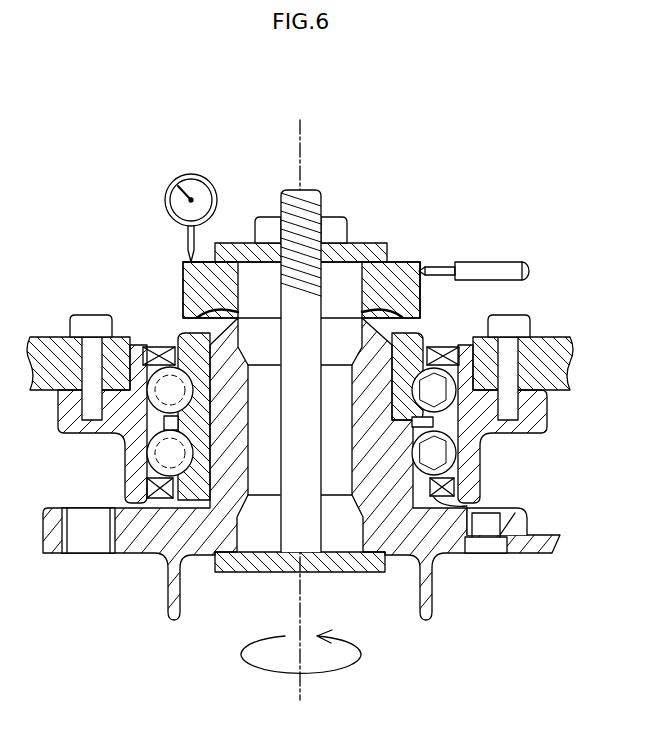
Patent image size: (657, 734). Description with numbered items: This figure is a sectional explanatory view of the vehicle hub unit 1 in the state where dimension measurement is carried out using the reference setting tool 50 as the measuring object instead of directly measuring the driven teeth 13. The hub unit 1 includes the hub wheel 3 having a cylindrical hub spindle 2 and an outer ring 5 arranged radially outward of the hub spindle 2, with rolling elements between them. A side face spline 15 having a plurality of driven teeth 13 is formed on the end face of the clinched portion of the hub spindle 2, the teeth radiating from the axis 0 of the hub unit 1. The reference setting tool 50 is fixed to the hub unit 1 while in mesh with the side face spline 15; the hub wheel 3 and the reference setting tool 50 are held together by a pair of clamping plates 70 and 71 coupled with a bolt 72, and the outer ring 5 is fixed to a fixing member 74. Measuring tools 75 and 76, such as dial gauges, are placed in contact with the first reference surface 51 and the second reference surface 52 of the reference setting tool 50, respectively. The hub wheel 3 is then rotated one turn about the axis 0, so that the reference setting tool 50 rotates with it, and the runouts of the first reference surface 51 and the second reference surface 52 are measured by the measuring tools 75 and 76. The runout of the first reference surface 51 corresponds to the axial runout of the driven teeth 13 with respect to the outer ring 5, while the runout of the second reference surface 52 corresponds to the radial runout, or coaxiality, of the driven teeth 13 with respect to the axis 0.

The axis 0 is at (298, 142).
The vehicle hub unit 1 is at (307, 456).
The hub spindle 2 is at (200, 480).
The hub wheel 3 is at (557, 508).
The outer ring 5 is at (83, 436).
The driven teeth 13 is at (187, 318).
The side face spline 15 is at (173, 316).
The reference setting tool 50 is at (334, 244).
The first reference surface 51 is at (205, 250).
The second reference surface 52 is at (421, 300).
The clamping plate 70 is at (372, 578).
The clamping plate 71 is at (371, 243).
The bolt 72 is at (310, 188).
The fixing member 74 is at (45, 338).
The measuring tool 75 is at (191, 174).
The measuring tool 76 is at (500, 262).